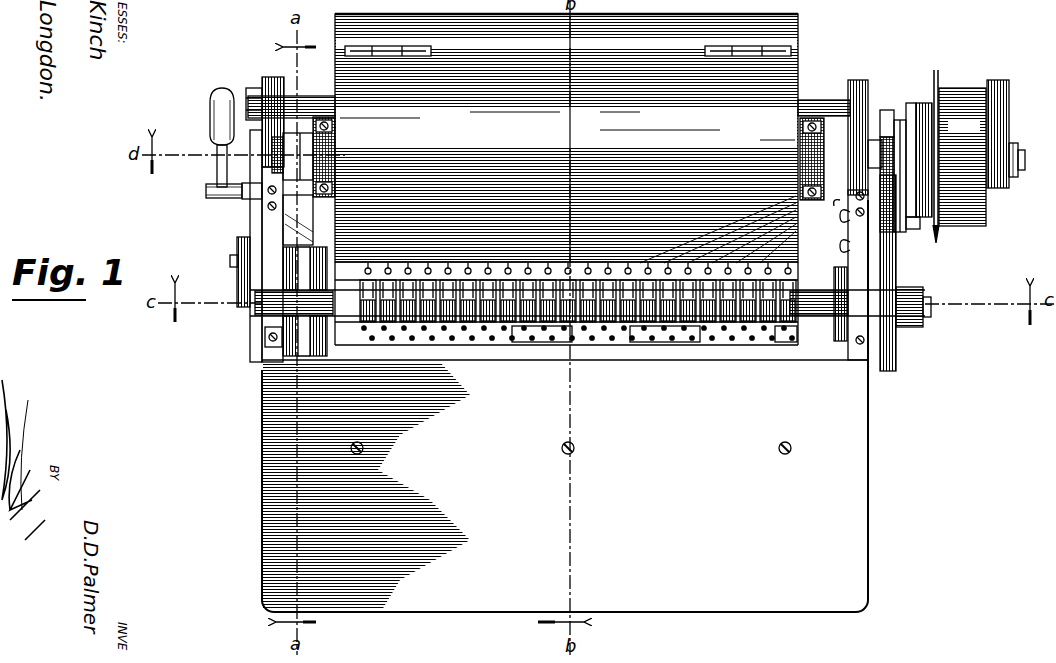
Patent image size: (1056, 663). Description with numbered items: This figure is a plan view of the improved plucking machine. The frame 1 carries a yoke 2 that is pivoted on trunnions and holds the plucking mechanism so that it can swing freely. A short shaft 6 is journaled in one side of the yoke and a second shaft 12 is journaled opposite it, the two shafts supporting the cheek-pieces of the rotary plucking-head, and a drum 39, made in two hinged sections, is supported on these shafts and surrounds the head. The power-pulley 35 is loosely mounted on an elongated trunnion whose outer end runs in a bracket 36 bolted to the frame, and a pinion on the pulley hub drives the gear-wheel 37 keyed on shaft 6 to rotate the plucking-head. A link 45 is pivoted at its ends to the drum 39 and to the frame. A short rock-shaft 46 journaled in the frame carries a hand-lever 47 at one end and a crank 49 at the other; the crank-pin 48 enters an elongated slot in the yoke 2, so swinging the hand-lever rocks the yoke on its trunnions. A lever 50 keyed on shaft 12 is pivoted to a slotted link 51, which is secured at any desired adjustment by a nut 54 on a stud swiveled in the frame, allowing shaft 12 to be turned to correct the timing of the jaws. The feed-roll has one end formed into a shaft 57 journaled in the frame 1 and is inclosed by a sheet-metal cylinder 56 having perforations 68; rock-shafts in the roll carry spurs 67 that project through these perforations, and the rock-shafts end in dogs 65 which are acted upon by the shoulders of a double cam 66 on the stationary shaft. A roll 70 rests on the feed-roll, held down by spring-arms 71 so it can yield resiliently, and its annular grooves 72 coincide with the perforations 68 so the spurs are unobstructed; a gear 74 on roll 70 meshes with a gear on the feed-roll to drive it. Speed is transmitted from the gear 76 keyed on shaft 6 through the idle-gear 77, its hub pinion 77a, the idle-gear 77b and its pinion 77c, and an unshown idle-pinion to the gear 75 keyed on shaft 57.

The frame 1 is at (272, 84).
The yoke 2 is at (296, 175).
The short shaft 6 is at (846, 192).
The shaft 12 is at (280, 150).
The power-pulley 35 is at (966, 120).
The bracket 36 is at (1006, 140).
The gear-wheel 37 is at (937, 125).
The drum 39 is at (566, 138).
The link 45 is at (328, 200).
The short rock-shaft 46 is at (206, 191).
The hand-lever 47 is at (214, 118).
The crank-pin 48 is at (301, 220).
The crank 49 is at (245, 198).
The lever 50 is at (258, 210).
The link 51 is at (240, 270).
The nut 54 is at (237, 252).
The sheet-metal cylinder 56 is at (780, 334).
The shaft 57 is at (928, 315).
The dogs 65 is at (290, 290).
The double cam 66 is at (268, 335).
The spurs 67 is at (842, 216).
The perforations 68 is at (574, 334).
The roll 70 is at (478, 300).
The spring-arms 71 is at (272, 226).
The annular grooves 72 is at (692, 334).
The gear 74 is at (838, 290).
The gear 75 is at (886, 371).
The gear 76 is at (898, 150).
The idle-gear 77 is at (878, 112).
The pinion 77a is at (910, 140).
The idle-gear 77b is at (914, 248).
The pinion 77c is at (940, 235).